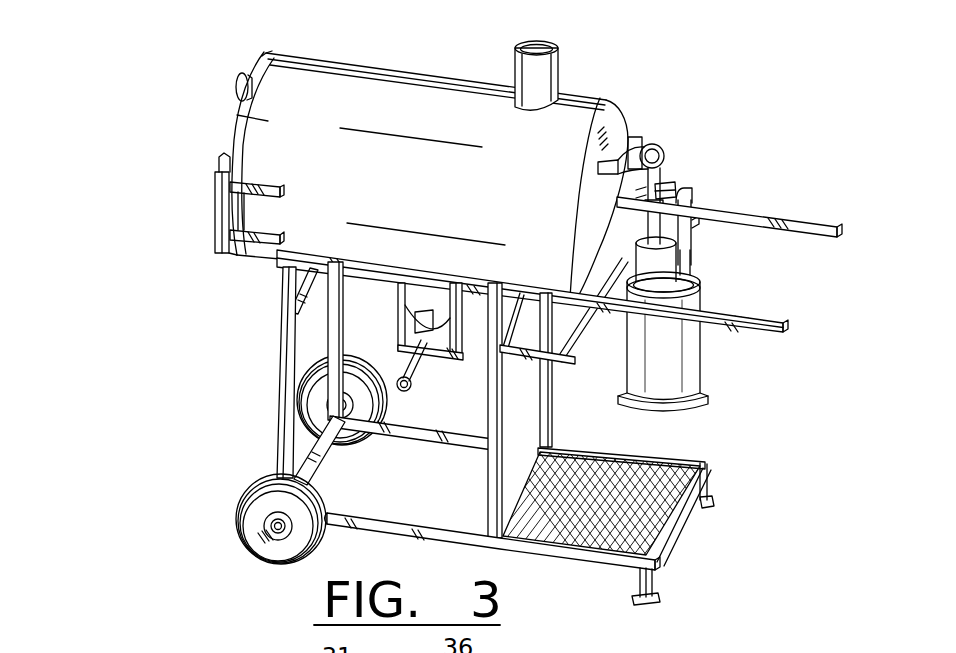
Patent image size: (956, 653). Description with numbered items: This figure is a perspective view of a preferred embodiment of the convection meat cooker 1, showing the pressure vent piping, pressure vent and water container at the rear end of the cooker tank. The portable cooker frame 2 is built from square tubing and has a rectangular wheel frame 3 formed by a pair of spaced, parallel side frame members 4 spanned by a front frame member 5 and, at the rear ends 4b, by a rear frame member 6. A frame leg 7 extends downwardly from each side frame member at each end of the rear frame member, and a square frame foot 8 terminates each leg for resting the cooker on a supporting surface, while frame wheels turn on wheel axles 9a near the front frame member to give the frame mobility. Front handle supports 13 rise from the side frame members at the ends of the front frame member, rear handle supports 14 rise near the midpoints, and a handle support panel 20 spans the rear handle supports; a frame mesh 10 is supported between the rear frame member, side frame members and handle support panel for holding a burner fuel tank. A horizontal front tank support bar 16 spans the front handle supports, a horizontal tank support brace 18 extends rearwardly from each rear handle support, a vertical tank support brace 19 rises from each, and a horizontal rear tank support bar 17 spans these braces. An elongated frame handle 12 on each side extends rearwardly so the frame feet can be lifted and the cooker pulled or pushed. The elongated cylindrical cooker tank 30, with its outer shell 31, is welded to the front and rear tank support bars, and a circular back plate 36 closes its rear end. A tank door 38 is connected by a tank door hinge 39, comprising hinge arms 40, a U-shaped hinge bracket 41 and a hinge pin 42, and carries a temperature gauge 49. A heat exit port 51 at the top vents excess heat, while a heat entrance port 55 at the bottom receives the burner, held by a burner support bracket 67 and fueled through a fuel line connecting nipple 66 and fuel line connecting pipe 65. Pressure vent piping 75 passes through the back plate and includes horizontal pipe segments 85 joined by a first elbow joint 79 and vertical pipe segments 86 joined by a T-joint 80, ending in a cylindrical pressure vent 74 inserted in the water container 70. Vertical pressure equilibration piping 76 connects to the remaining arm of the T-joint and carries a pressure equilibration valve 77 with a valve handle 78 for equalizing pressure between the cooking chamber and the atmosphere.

The convection meat cooker 1 is at (92, 157).
The portable cooker frame 2 is at (248, 388).
The rectangular wheel frame 3 is at (710, 446).
The side frame members 4 is at (420, 528).
The rear ends 4b is at (707, 470).
The front frame member 5 is at (314, 482).
The rear frame member 6 is at (700, 533).
The frame leg 7 is at (707, 490).
The frame foot 8 is at (712, 507).
The wheel axles 9a is at (281, 536).
The frame mesh 10 is at (637, 470).
The frame handle 12 is at (768, 324).
The front handle supports 13 is at (284, 372).
The rear handle supports 14 is at (492, 416).
The front tank support bar 16 is at (296, 297).
The rear tank support bar 17 is at (586, 320).
The horizontal tank support brace 18 is at (524, 358).
The vertical tank support brace 19 is at (568, 313).
The handle support panel 20 is at (499, 482).
The cooker tank 30 is at (390, 52).
The outer shell 31 is at (481, 82).
The back plate 36 is at (618, 126).
The tank door 38 is at (236, 60).
The tank door hinge 39 is at (262, 168).
The hinge arms 40 is at (214, 238).
The hinge bracket 41 is at (270, 198).
The hinge pin 42 is at (226, 160).
The temperature gauge 49 is at (238, 86).
The heat exit port 51 is at (560, 76).
The heat entrance port 55 is at (421, 300).
The fuel line connecting pipe 65 is at (412, 372).
The fuel line connecting nipple 66 is at (394, 447).
The burner support bracket 67 is at (408, 347).
The water container 70 is at (680, 357).
The pressure vent 74 is at (636, 262).
The pressure vent piping 75 is at (586, 147).
The pressure equilibration piping 76 is at (700, 266).
The pressure equilibration valve 77 is at (700, 246).
The valve handle 78 is at (718, 230).
The first elbow joint 79 is at (684, 176).
The T-joint 80 is at (674, 188).
The horizontal pipe segments 85 is at (655, 150).
The vertical pipe segments 86 is at (634, 196).